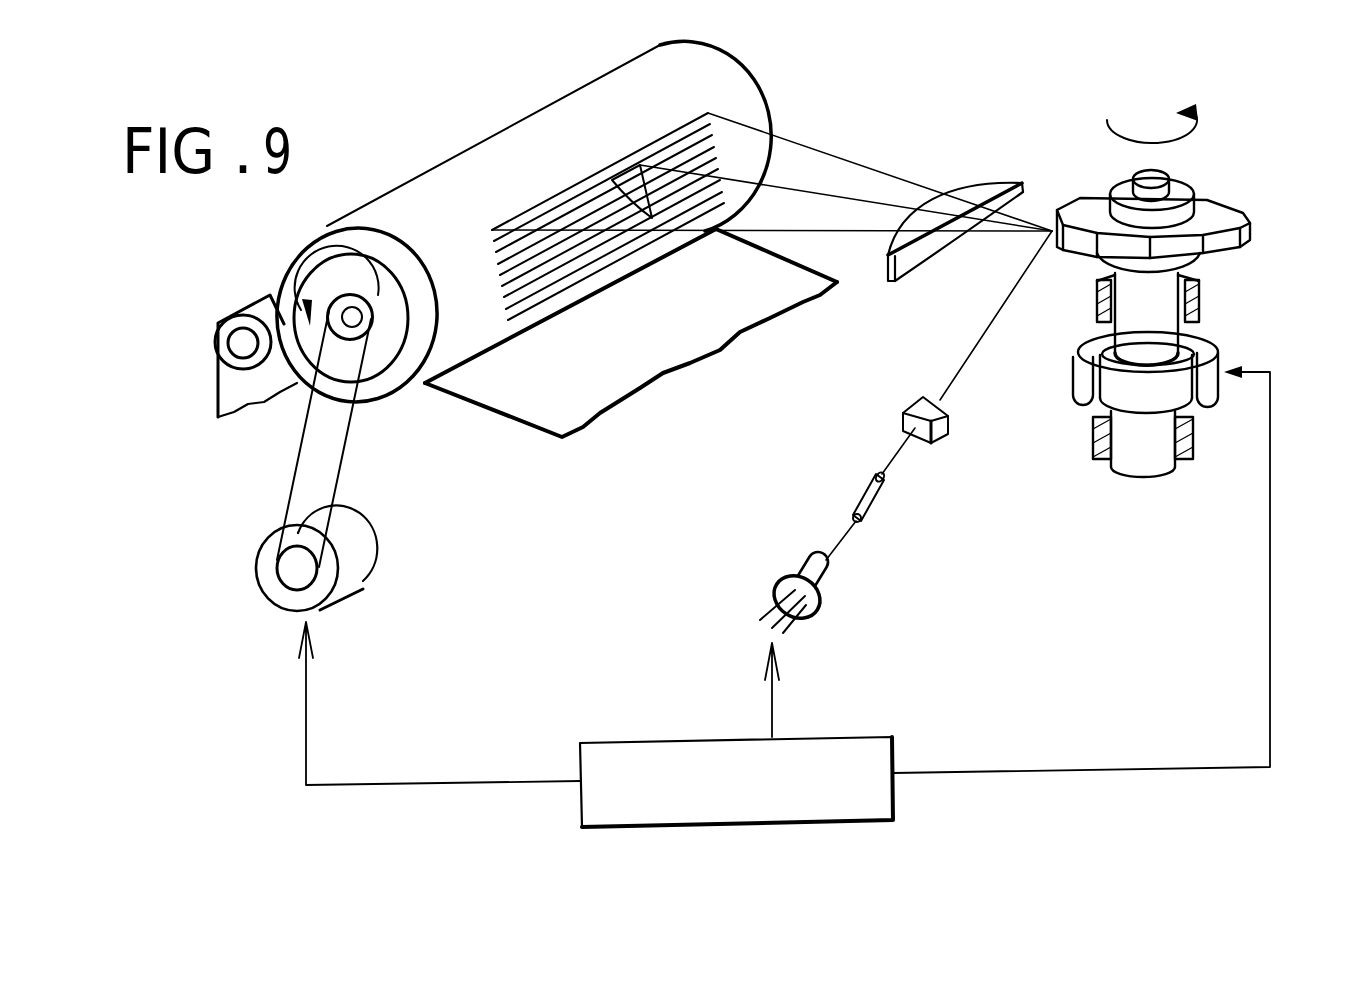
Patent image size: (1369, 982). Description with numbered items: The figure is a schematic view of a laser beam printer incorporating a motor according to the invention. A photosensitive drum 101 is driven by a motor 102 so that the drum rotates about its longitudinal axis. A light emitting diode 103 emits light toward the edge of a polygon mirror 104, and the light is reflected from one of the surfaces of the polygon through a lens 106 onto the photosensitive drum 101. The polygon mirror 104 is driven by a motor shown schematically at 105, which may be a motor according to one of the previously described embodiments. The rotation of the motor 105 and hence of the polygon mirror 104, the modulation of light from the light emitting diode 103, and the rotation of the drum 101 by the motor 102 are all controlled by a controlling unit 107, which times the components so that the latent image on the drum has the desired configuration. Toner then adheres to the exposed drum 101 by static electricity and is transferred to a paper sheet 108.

The photosensitive drum 101 is at (462, 185).
The motor 102 is at (357, 577).
The light emitting diode 103 is at (826, 568).
The polygon mirror 104 is at (1227, 210).
The motor 105 is at (1236, 355).
The lens 106 is at (987, 178).
The controlling unit 107 is at (895, 797).
The paper sheet 108 is at (665, 350).